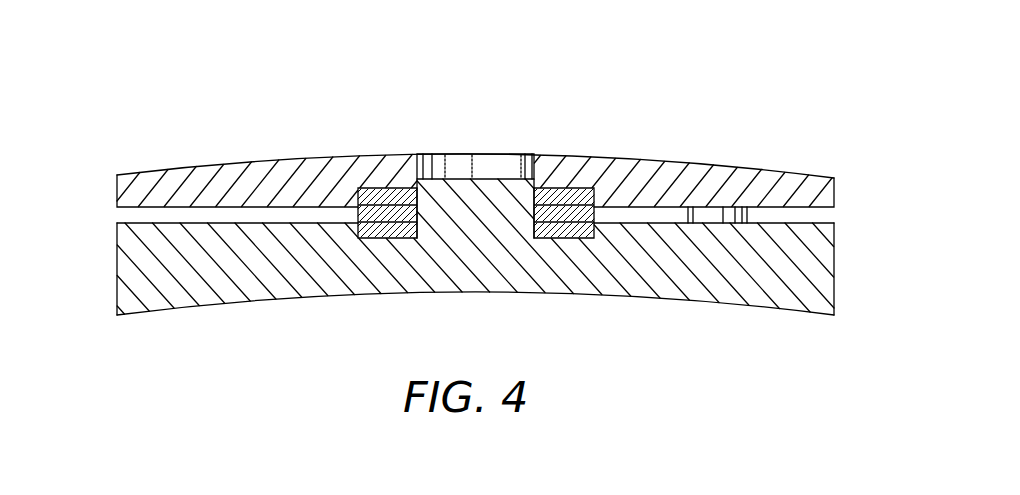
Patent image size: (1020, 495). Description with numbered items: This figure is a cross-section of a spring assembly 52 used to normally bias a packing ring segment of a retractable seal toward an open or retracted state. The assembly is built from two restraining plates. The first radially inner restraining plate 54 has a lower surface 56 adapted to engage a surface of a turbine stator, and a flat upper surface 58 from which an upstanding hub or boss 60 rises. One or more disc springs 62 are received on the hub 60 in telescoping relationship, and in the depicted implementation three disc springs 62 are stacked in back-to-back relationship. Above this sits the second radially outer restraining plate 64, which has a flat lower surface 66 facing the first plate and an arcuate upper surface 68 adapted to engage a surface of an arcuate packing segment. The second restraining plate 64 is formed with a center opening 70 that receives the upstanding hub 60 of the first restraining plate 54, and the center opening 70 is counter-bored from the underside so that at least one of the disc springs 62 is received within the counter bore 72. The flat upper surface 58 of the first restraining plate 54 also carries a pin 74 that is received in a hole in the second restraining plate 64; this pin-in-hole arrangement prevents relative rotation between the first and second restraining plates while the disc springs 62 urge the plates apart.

The spring assembly 52 is at (762, 118).
The first radially inner restraining plate 54 is at (155, 270).
The lower surface 56 is at (218, 303).
The flat upper surface 58 is at (147, 223).
The upstanding hub 60 is at (483, 207).
The disc springs 62 is at (387, 192).
The second radially outer restraining plate 64 is at (676, 178).
The flat lower surface 66 is at (777, 212).
The arcuate upper surface 68 is at (220, 163).
The center opening 70 is at (444, 154).
The counter bore 72 is at (357, 188).
The pin 74 is at (714, 218).